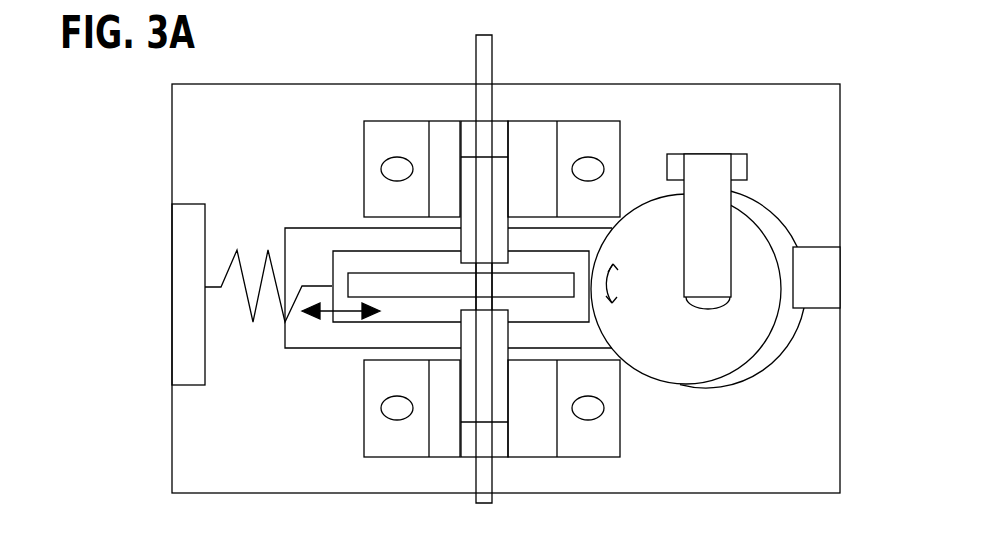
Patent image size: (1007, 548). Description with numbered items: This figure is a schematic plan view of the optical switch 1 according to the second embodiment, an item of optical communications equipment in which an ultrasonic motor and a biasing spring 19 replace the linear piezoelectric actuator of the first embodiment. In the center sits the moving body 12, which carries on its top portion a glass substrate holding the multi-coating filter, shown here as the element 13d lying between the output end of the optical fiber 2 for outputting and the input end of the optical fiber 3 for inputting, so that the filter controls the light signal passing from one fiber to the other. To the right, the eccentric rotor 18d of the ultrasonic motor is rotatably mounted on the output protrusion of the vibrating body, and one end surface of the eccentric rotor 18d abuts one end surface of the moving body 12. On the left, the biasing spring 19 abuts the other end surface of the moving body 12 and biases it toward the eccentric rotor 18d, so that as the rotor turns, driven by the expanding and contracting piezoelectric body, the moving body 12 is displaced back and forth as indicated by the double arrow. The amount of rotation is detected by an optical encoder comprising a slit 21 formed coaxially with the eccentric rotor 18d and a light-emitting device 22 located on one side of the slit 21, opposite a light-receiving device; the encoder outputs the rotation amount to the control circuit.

The optical switch 1 is at (270, 46).
The optical fiber for outputting 2 is at (487, 67).
The optical fiber for inputting 3 is at (487, 495).
The moving body 12 is at (368, 341).
The movable member 13d is at (360, 289).
The biasing spring 19 is at (248, 323).
The slit 21 is at (777, 222).
The light-emitting device 22 is at (825, 310).
The eccentric rotor 18d is at (682, 375).